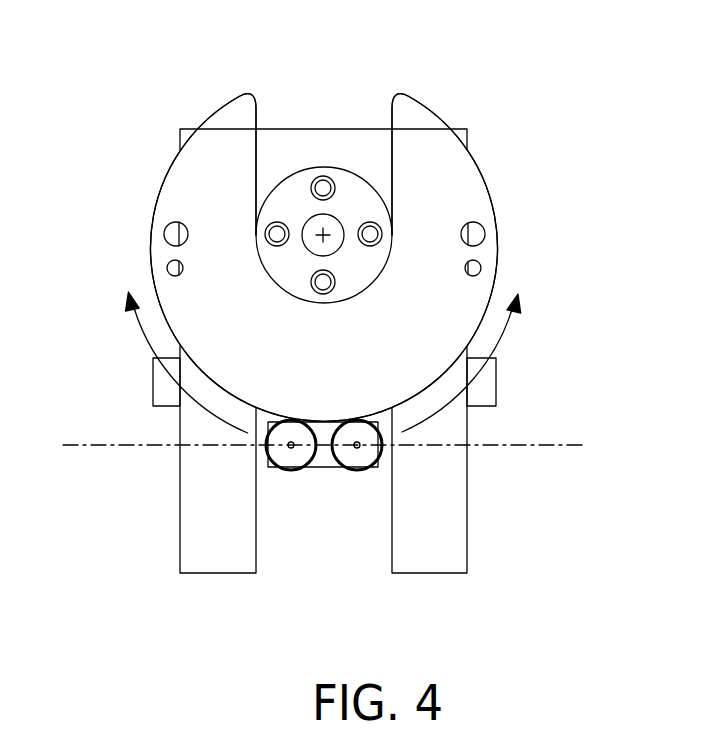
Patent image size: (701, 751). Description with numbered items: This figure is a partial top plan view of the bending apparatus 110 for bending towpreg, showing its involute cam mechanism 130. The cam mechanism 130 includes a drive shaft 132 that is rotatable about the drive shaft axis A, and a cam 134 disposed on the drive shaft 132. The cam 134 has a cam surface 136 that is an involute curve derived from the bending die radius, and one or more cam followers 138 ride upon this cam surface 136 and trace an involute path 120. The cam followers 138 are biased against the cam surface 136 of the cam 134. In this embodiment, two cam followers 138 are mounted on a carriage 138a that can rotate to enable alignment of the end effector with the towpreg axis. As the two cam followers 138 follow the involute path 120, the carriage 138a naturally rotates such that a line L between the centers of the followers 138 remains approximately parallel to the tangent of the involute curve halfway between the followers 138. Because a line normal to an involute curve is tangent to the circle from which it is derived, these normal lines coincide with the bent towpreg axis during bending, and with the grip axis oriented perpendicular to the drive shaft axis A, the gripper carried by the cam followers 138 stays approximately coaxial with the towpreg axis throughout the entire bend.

The bending apparatus 110 is at (578, 123).
The involute path 120 is at (501, 344).
The involute cam mechanism 130 is at (458, 197).
The drive shaft 132 is at (313, 216).
The cam 134 is at (187, 180).
The cam surface 136 is at (148, 267).
The cam followers 138 is at (285, 457).
The carriage 138a is at (323, 458).
The drive shaft axis A is at (327, 233).
The line L-- L is at (324, 448).